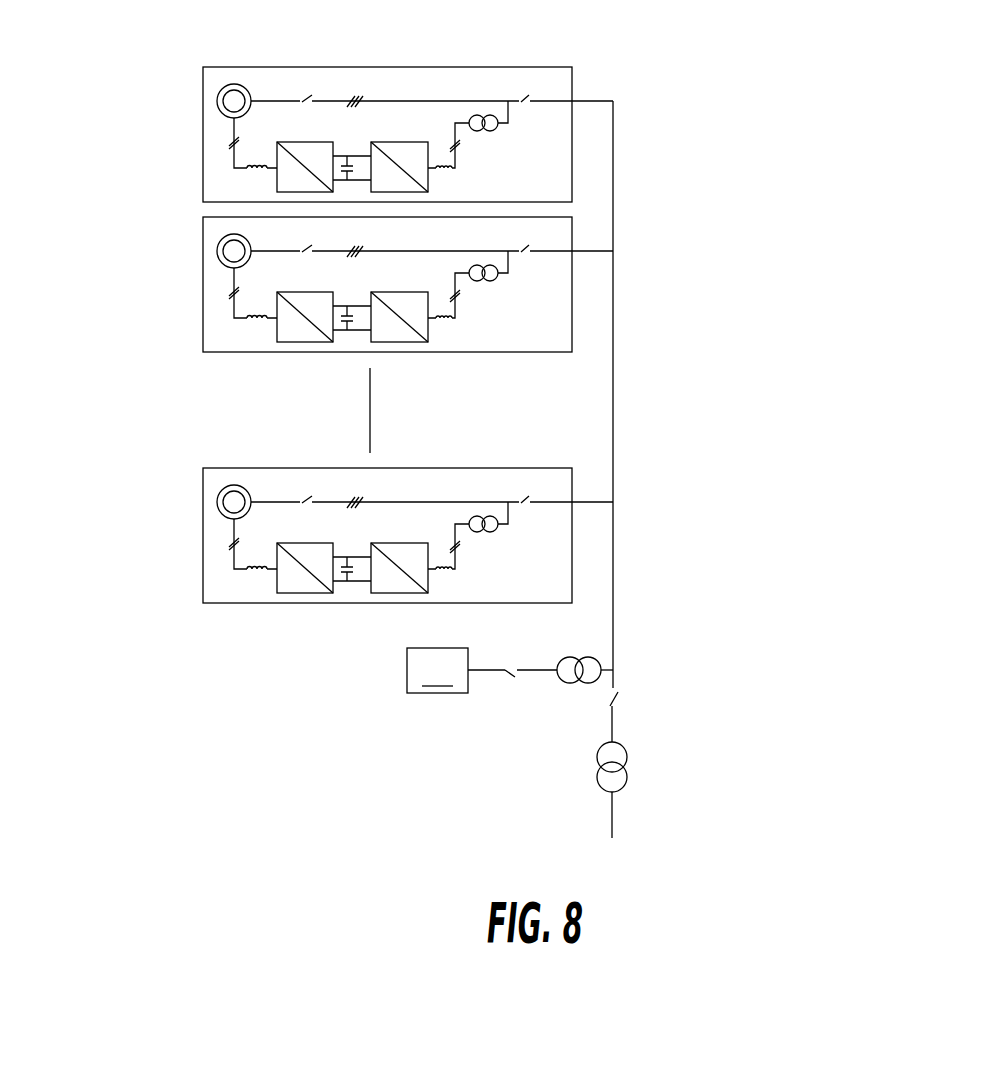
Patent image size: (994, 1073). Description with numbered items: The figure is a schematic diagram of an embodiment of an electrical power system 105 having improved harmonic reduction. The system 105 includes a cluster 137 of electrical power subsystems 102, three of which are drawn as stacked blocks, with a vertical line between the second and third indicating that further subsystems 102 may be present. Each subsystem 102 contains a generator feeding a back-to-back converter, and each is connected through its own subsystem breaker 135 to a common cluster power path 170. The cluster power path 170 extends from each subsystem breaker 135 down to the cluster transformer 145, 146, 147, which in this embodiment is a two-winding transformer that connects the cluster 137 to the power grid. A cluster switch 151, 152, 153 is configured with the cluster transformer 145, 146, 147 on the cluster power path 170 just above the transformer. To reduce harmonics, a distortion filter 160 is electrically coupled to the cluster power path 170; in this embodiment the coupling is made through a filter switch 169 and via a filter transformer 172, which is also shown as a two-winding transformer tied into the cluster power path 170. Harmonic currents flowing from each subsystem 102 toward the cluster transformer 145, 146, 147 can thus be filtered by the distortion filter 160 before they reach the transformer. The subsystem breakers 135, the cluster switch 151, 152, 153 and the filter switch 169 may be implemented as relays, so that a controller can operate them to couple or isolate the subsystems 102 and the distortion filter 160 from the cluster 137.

The electrical power subsystem 102 is at (173, 145).
The electrical power system 105 is at (740, 87).
The subsystem breaker 135 is at (532, 95).
The cluster 137 is at (95, 191).
The cluster transformer 145 is at (710, 785).
The cluster transformer 146 is at (710, 785).
The cluster transformer 147 is at (638, 769).
The cluster switch 151 is at (721, 684).
The cluster switch 152 is at (721, 684).
The cluster switch 153 is at (636, 694).
The distortion filter 160 is at (456, 670).
The filter switch 169 is at (506, 690).
The cluster power path 170 is at (620, 546).
The filter transformer 172 is at (579, 690).